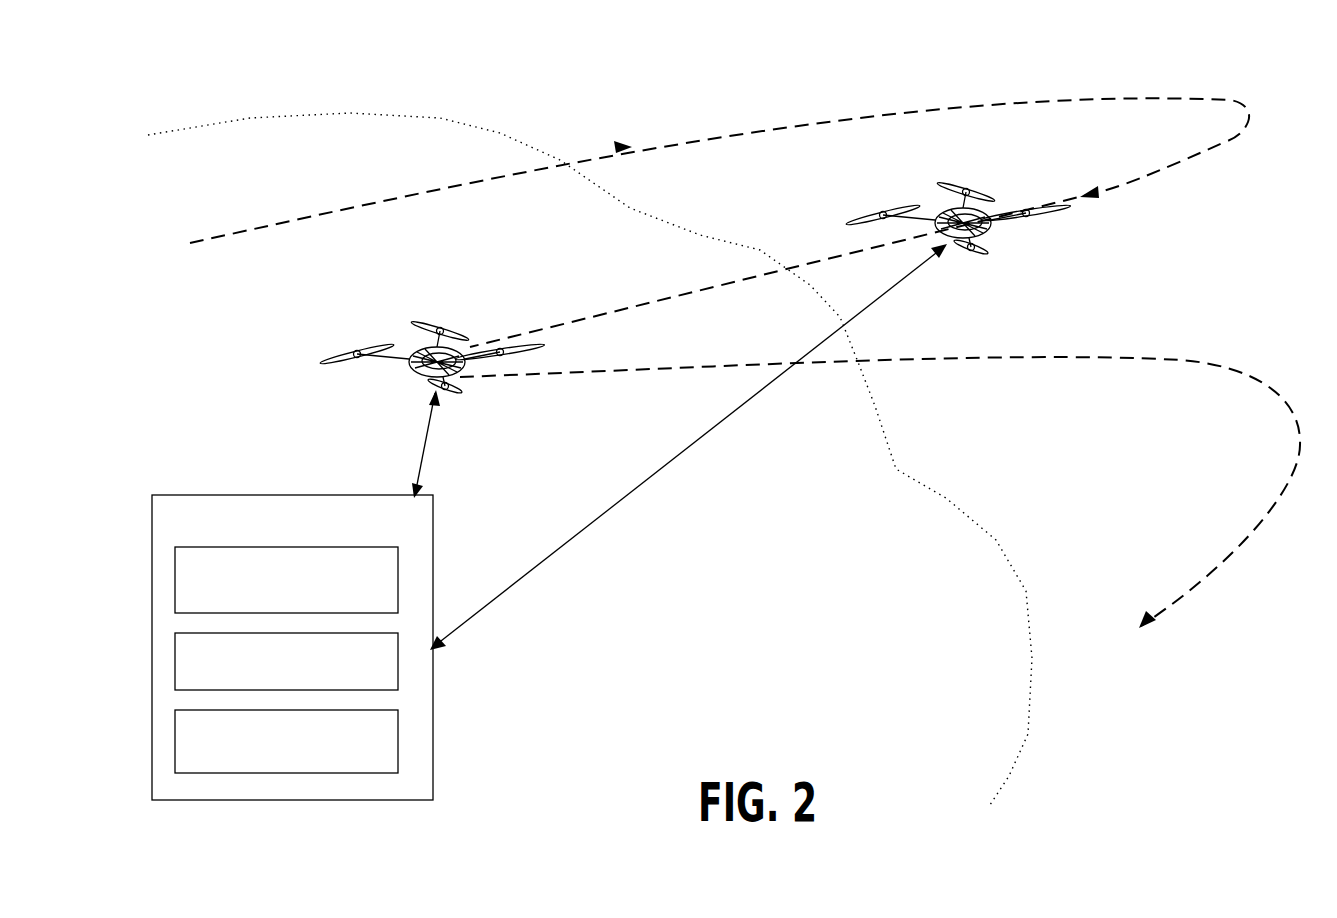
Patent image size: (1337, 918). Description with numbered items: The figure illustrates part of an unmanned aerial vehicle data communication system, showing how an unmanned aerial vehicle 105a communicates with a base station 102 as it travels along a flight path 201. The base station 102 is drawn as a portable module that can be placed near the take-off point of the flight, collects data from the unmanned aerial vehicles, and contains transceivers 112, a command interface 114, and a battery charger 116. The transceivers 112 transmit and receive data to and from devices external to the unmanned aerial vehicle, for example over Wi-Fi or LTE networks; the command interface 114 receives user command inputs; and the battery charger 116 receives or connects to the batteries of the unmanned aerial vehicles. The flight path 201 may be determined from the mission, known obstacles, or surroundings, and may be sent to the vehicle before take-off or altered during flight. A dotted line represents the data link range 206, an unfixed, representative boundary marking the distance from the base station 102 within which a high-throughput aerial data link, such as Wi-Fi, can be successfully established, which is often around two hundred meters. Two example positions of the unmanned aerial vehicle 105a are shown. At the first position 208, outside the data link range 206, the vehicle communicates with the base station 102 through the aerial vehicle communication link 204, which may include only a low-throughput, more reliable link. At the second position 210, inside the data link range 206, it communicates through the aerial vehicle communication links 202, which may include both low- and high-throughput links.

The flight path 201 is at (1238, 102).
The unmanned aerial vehicle 105a is at (460, 312).
The first position 208 is at (990, 294).
The second position 210 is at (512, 424).
The data link range 206 is at (1028, 591).
The aerial vehicle communication links 202 is at (422, 462).
The aerial vehicle communication link 204 is at (692, 448).
The base station 102 is at (292, 647).
The transceivers 112 is at (286, 580).
The command interface 114 is at (286, 661).
The battery charger 116 is at (286, 741).